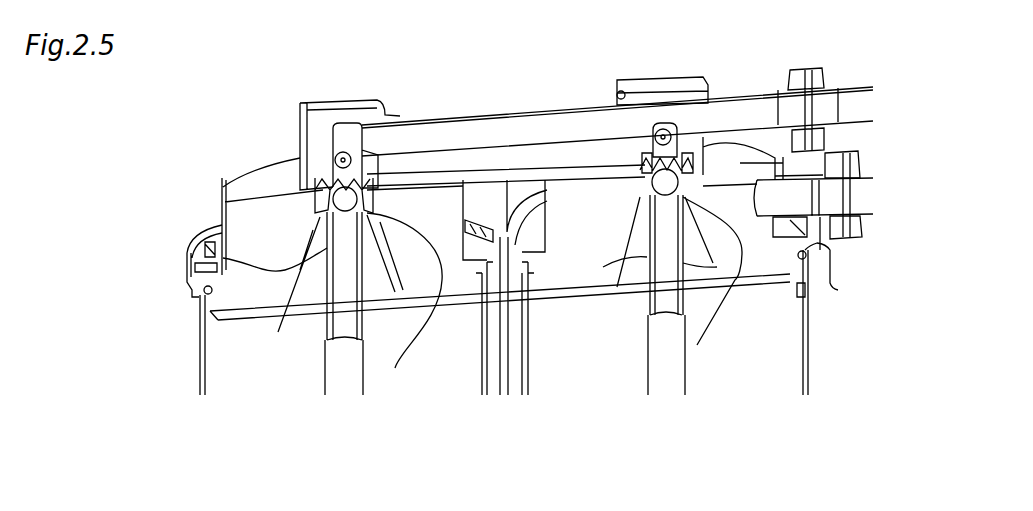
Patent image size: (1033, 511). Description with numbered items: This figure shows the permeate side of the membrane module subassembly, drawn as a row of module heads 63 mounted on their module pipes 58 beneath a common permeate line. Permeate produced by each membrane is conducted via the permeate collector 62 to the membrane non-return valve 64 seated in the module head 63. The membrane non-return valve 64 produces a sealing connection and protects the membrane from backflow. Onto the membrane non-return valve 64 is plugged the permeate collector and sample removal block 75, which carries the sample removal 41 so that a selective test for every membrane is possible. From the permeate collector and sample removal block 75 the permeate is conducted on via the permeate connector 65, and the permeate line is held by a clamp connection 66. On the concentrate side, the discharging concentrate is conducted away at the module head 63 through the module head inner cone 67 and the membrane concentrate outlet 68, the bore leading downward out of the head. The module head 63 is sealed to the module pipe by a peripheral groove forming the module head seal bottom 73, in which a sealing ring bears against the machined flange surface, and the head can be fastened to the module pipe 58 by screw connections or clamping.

The sample removal 41 is at (335, 160).
The module pipe 58 is at (198, 368).
The permeate collector 62 is at (328, 372).
The module head 63 is at (262, 228).
The membrane non-return valve 64 is at (222, 257).
The permeate connector 65 is at (468, 127).
The clamp connection 66 is at (803, 67).
The module head inner cone 67 is at (317, 298).
The membrane concentrate outlet 68 is at (395, 368).
The module head seal bottom 73 is at (838, 290).
The permeate collector and sample removal block 75 is at (343, 113).